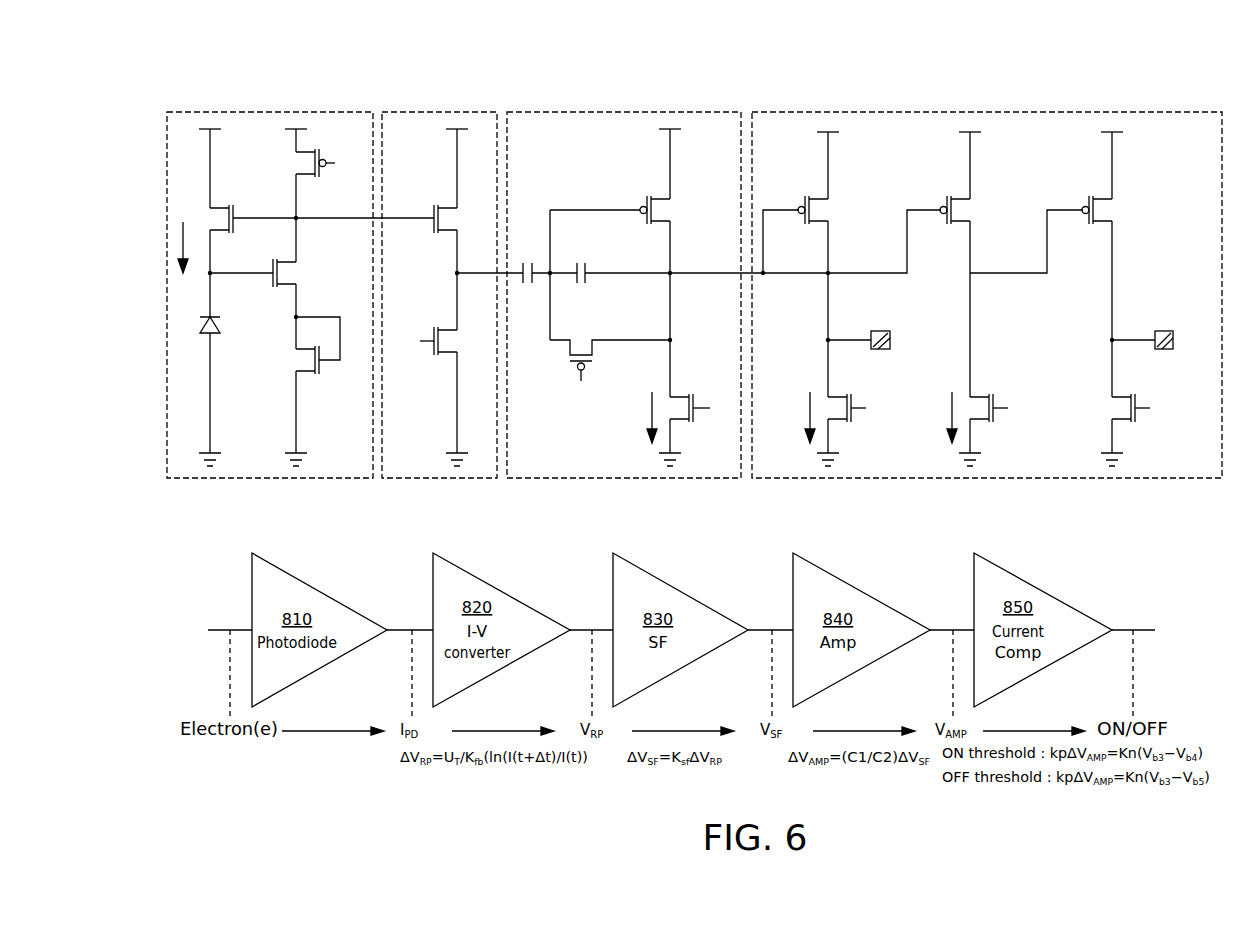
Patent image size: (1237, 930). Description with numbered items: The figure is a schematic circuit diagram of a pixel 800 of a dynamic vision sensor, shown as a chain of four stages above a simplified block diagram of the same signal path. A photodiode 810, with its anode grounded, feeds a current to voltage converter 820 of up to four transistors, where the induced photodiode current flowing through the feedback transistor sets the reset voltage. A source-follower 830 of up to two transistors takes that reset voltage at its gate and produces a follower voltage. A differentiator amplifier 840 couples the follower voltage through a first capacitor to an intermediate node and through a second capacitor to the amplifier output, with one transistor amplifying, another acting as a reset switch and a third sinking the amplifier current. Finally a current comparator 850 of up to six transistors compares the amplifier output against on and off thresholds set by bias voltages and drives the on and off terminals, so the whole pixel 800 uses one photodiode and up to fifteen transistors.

The pixel 800 is at (735, 78).
The photodiode 810 is at (218, 325).
The current to voltage (I-V) converter 820 is at (257, 110).
The source-follower (SF) 830 is at (455, 110).
The differentiator amplifier (Amp) 840 is at (603, 110).
The current comparator 850 is at (911, 110).